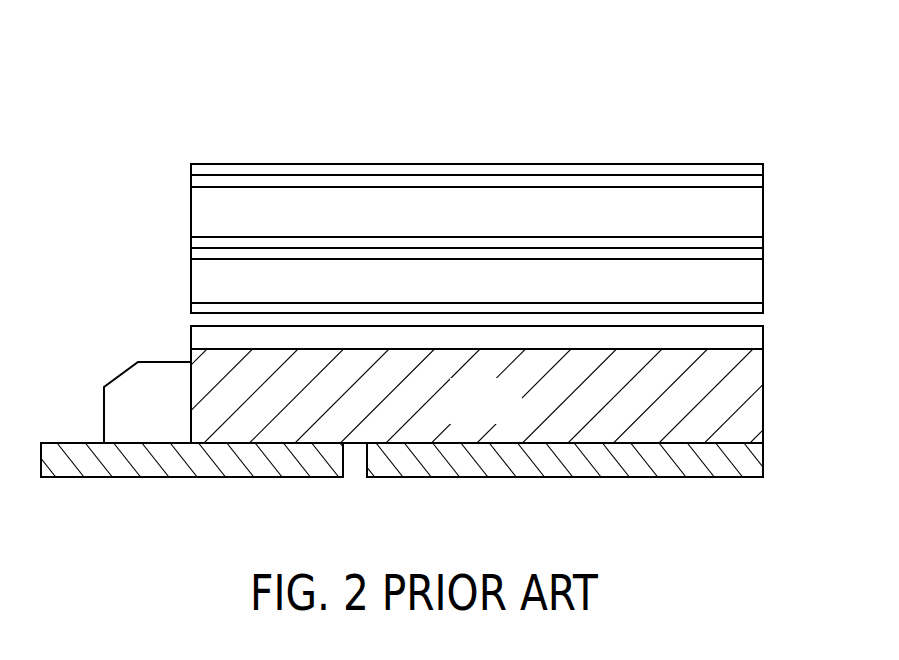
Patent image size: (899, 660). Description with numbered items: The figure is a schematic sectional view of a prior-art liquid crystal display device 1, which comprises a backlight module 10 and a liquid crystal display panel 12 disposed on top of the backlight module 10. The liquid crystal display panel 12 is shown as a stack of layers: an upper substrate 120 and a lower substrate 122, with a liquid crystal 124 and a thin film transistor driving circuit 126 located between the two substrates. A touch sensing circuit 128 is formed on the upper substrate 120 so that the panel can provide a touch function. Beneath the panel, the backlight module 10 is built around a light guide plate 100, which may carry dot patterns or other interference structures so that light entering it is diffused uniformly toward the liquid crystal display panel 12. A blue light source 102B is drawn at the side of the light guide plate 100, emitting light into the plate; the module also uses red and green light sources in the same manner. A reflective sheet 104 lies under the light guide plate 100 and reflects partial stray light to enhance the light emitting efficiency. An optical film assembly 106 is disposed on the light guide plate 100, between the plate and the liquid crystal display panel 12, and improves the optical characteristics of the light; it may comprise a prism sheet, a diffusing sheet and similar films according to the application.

The liquid crystal display device 1 is at (180, 68).
The backlight module 10 is at (436, 418).
The liquid crystal display panel 12 is at (511, 206).
The light guide plate 100 is at (462, 412).
The blue light source 102B is at (122, 372).
The reflective sheet 104 is at (577, 463).
The optical film assembly 106 is at (203, 342).
The upper substrate 120 is at (463, 224).
The lower substrate 122 is at (463, 293).
The liquid crystal 124 is at (677, 242).
The thin film transistor driving circuit 126 is at (722, 253).
The touch sensing circuit 128 is at (603, 180).